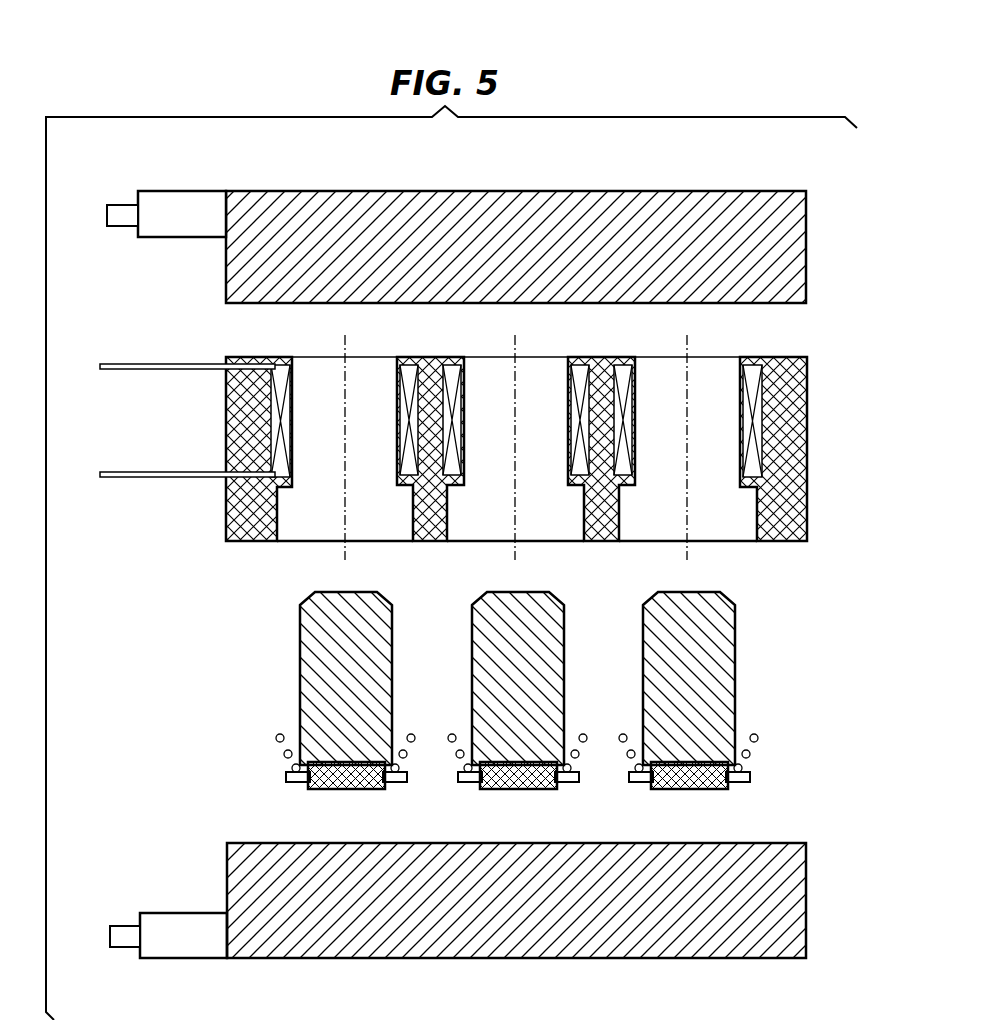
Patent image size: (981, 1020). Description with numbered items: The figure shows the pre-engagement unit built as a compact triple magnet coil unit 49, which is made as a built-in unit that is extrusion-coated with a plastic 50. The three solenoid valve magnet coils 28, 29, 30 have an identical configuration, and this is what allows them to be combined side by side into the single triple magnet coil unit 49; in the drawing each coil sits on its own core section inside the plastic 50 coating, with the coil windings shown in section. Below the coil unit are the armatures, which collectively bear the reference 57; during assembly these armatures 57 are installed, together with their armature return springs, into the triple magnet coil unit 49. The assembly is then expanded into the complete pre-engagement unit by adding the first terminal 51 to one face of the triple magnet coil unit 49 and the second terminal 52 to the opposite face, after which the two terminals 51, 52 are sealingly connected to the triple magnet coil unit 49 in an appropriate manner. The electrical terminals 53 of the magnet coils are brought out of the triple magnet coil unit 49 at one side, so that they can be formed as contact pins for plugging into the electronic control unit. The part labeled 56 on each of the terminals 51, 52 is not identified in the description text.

The magnet coil 28 is at (751, 372).
The magnet coil 29 is at (581, 372).
The magnet coil 30 is at (410, 372).
The triple magnet coil unit 49 is at (203, 511).
The plastic 50 is at (480, 453).
The first terminal 51 is at (807, 250).
The second terminal 52 is at (807, 900).
The electrical terminals 53 is at (184, 372).
The shaft stud 56 is at (172, 238).
The armatures 57 is at (203, 692).